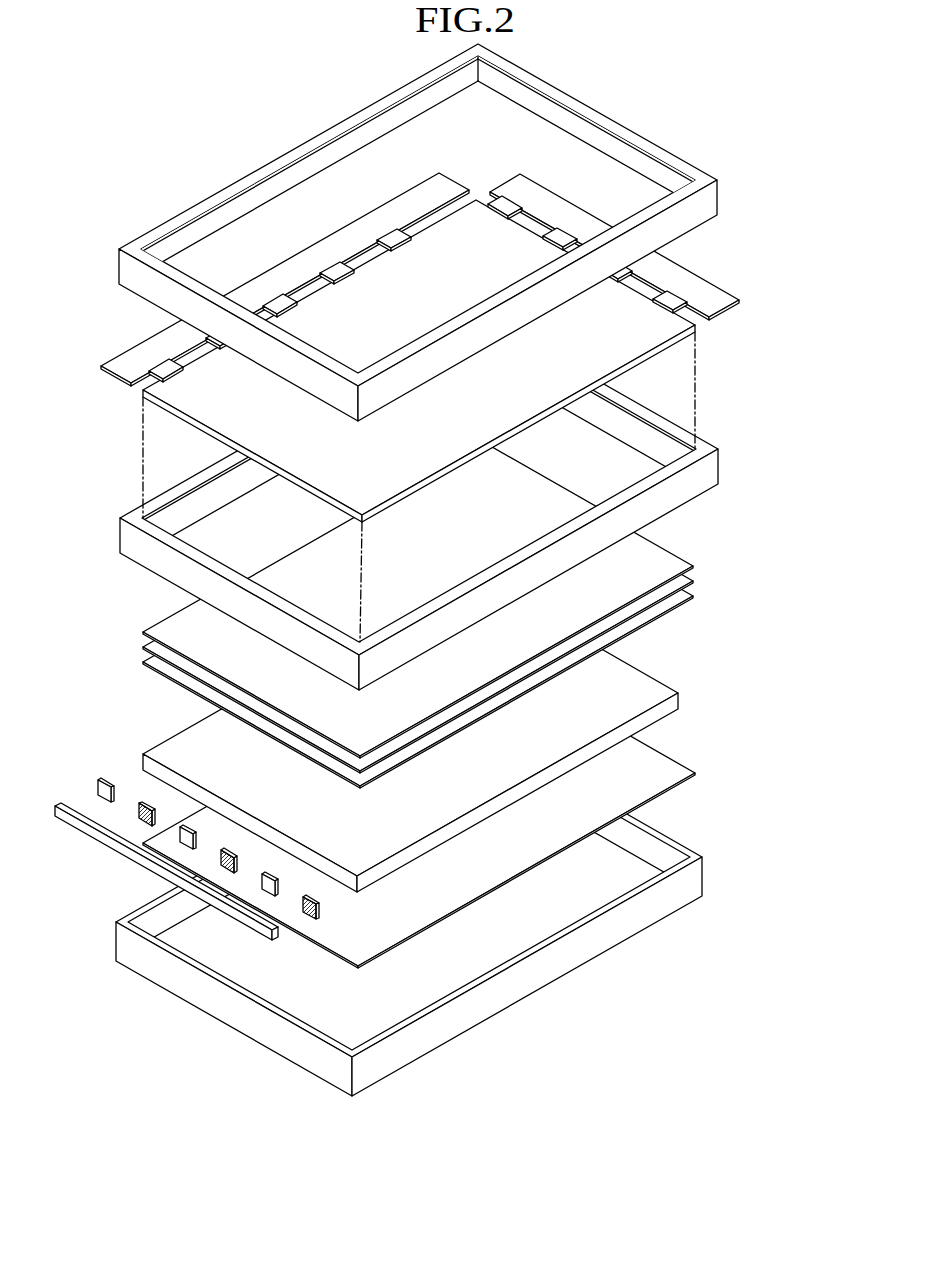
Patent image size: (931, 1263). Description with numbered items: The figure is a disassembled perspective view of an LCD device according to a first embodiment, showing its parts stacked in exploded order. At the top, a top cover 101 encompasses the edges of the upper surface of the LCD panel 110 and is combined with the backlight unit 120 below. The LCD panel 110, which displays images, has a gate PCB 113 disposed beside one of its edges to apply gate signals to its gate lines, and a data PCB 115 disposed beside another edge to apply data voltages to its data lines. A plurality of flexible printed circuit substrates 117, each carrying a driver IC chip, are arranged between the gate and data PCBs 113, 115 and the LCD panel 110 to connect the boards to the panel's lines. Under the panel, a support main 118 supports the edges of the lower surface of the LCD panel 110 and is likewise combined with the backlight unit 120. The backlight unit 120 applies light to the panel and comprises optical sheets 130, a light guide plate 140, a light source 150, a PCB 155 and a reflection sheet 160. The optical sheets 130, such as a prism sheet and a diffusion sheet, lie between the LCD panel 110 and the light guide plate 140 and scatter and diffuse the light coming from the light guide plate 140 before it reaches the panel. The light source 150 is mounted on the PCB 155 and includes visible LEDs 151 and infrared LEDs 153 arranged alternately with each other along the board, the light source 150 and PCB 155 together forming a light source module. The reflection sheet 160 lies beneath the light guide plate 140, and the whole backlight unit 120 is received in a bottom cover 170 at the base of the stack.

The top cover 101 is at (650, 138).
The LCD panel 110 is at (642, 302).
The gate PCB 113 is at (558, 207).
The data PCB 115 is at (400, 213).
The flexible printed circuit substrate 117 is at (502, 205).
The support main 118 is at (712, 467).
The backlight unit 120 is at (428, 769).
The optical sheets 130 is at (445, 615).
The light guide plate 140 is at (667, 718).
The light source 150 is at (196, 803).
The visible LED 151 is at (95, 782).
The infrared LED 153 is at (221, 821).
The PCB 155 is at (85, 832).
The reflection sheet 160 is at (668, 780).
The bottom cover 170 is at (683, 873).